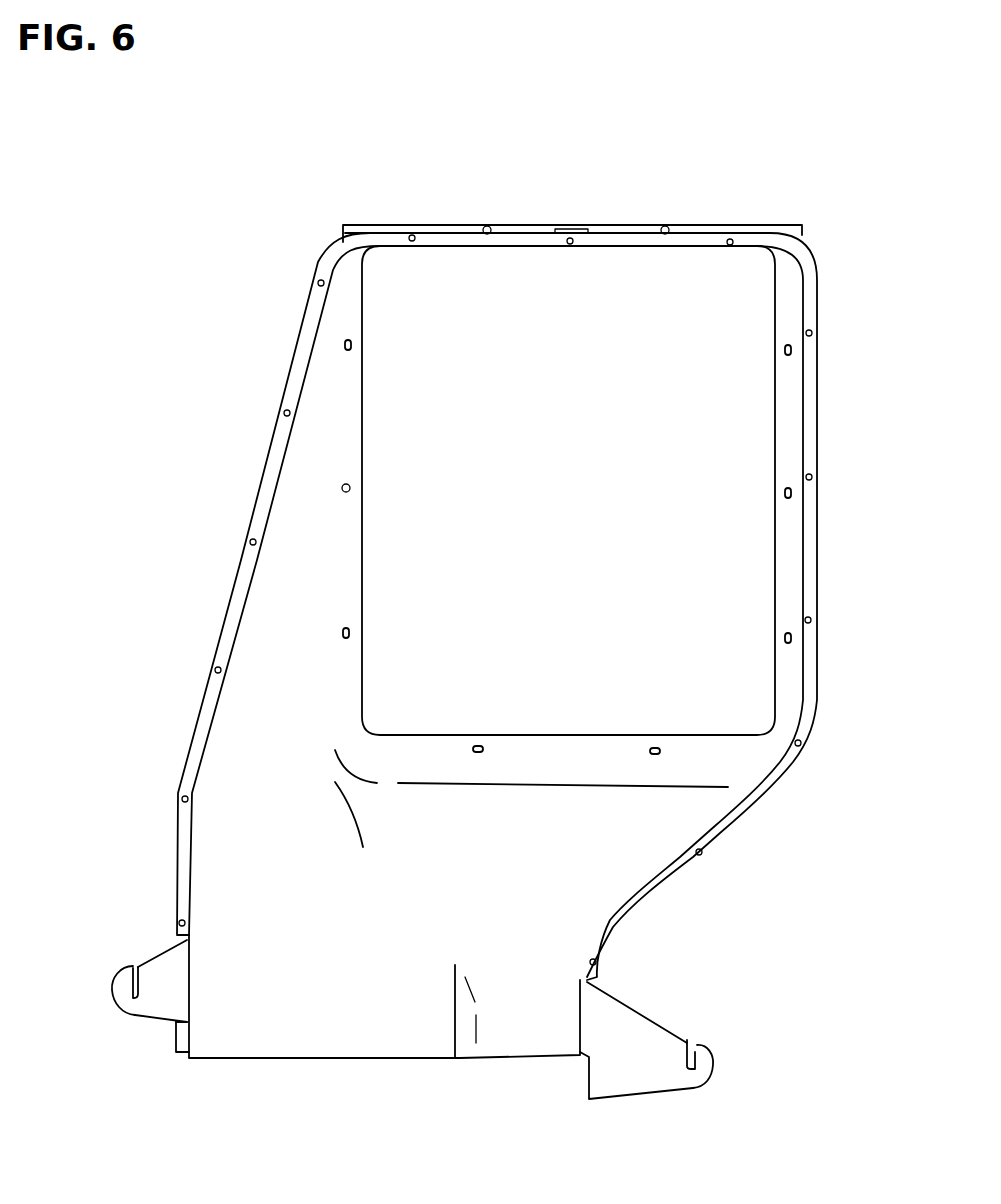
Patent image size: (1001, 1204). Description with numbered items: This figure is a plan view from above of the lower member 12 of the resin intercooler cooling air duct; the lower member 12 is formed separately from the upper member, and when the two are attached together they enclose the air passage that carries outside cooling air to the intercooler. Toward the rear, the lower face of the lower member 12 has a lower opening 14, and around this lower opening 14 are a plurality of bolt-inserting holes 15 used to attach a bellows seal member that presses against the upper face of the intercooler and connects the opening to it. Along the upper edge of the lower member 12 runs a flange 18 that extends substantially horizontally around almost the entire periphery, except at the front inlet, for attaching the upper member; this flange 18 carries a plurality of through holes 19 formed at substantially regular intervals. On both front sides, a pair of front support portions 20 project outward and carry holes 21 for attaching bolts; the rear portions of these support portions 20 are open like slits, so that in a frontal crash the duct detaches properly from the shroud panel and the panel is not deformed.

The lower member 12 is at (272, 185).
The lower opening 14 is at (361, 412).
The bolt-inserting holes 15 is at (482, 230).
The flange 18 is at (810, 410).
The through holes 19 is at (732, 240).
The front support portions 20 is at (155, 1007).
The holes 21 is at (128, 968).